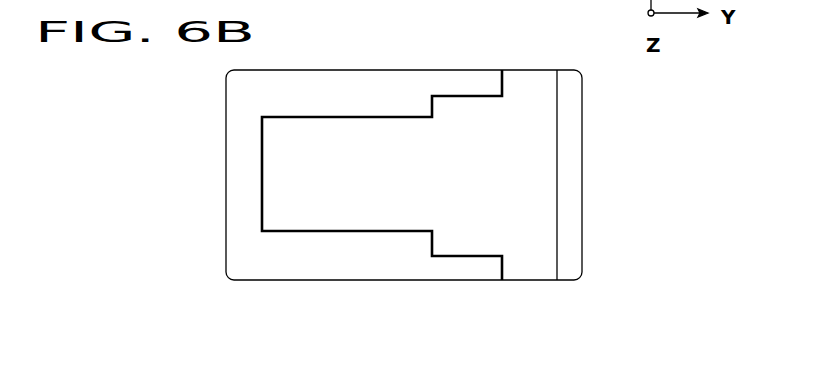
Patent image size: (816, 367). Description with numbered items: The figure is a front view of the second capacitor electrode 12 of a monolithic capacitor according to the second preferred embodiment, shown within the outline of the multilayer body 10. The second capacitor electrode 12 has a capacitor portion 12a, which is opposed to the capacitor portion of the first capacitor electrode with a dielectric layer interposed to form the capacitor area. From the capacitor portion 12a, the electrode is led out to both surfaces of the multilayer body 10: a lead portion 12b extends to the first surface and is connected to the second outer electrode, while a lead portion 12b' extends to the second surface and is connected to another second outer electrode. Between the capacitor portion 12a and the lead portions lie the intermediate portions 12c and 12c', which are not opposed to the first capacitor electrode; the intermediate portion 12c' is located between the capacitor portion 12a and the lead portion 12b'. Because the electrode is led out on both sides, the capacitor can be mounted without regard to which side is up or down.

The multilayer body 10 is at (226, 186).
The second capacitor electrode 12 is at (332, 116).
The capacitor portion 12a is at (345, 190).
The lead portion 12b is at (523, 305).
The lead portion 12b' is at (533, 55).
The intermediate portion 12c is at (467, 298).
The intermediate portion 12c' is at (467, 58).